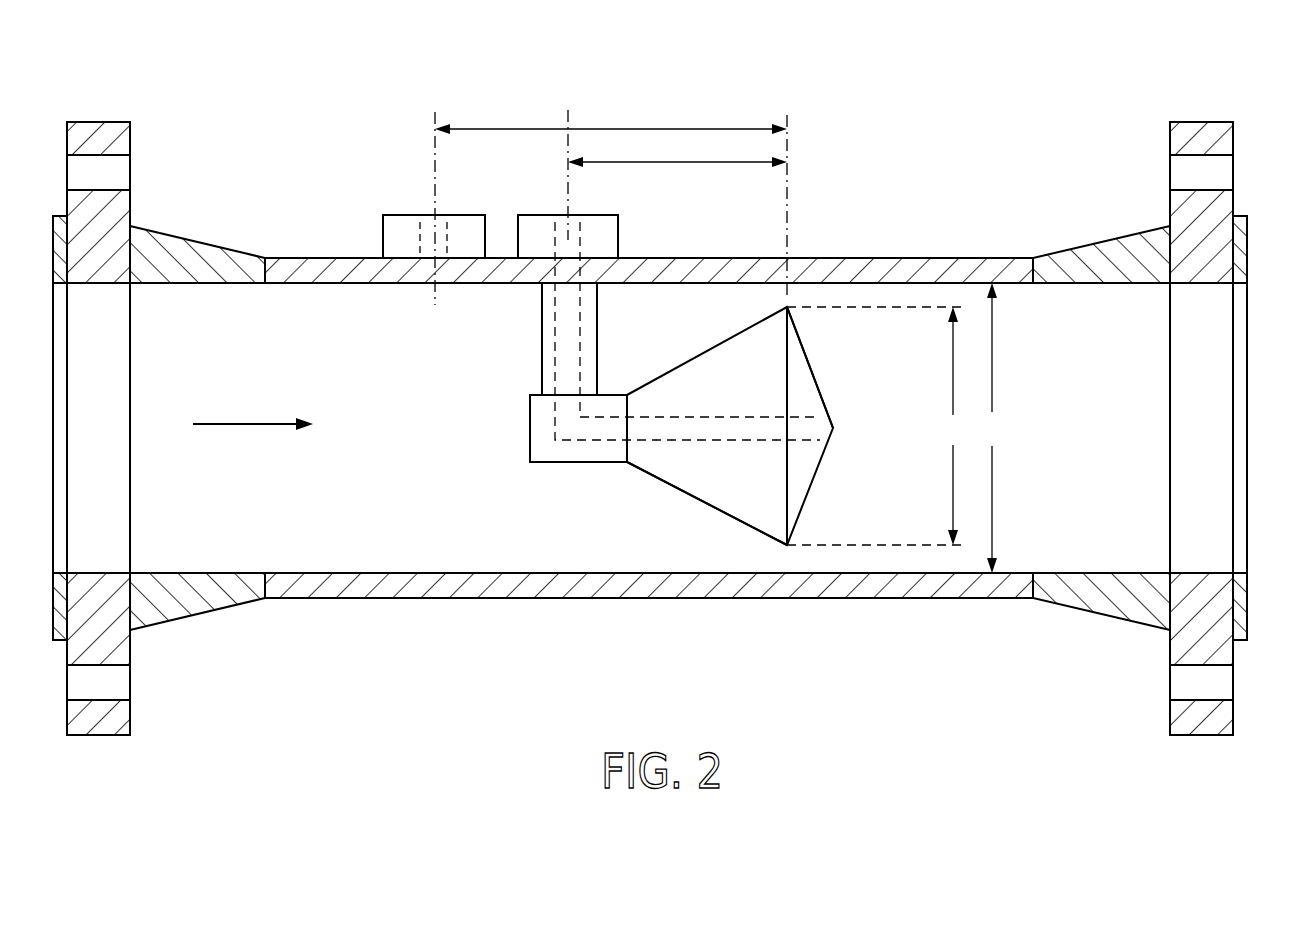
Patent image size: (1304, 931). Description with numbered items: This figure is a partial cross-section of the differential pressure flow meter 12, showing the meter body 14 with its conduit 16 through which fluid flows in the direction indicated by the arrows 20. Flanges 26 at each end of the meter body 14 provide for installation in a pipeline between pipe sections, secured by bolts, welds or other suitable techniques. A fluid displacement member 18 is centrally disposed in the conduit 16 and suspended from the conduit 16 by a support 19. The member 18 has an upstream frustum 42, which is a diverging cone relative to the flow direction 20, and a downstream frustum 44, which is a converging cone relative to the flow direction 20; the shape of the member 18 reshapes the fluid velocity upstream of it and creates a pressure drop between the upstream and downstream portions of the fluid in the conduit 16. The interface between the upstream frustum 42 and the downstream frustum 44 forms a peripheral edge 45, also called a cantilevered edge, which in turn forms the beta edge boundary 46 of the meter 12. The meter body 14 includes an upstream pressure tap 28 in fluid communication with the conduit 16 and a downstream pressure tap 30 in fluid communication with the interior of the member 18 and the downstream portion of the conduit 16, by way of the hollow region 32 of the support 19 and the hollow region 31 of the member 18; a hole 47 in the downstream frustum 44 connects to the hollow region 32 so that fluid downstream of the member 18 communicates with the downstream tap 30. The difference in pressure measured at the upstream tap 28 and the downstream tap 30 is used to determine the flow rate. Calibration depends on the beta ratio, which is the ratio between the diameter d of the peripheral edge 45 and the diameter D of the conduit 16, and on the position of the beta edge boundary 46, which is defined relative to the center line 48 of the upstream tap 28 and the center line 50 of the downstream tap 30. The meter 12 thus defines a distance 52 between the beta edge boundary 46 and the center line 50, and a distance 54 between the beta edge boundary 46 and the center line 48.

The differential pressure flow meter 12 is at (860, 108).
The meter body 14 is at (852, 600).
The conduit 16 is at (1150, 514).
The fluid displacement member 18 is at (683, 355).
The support 19 is at (540, 358).
The arrows 20 is at (245, 424).
The flanges 26 is at (100, 122).
The upstream pressure tap 28 is at (383, 228).
The downstream pressure tap 30 is at (618, 230).
The hollow region of the fluid displacement member 31 is at (553, 307).
The hollow region of the support 32 is at (597, 448).
The upstream frustum 42 is at (698, 508).
The downstream frustum 44 is at (815, 365).
The peripheral edge 45 is at (783, 545).
The beta edge boundary 46 is at (790, 212).
The hole 47 is at (834, 430).
The center line of the upstream tap 48 is at (435, 115).
The center line of the downstream tap 50 is at (570, 115).
The distance between the beta edge boundary and the downstream tap center line 52 is at (728, 162).
The distance between the beta edge boundary and the upstream tap center line 54 is at (684, 129).
The diameter of the peripheral edge d is at (953, 426).
The diameter of the conduit D is at (992, 428).